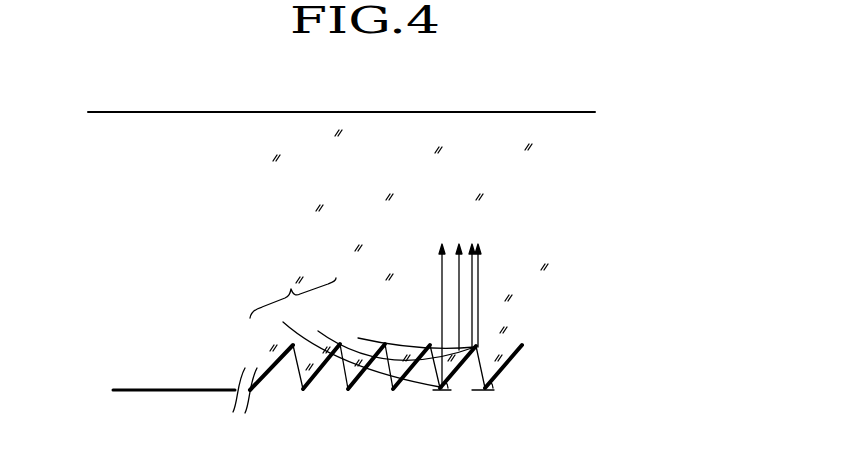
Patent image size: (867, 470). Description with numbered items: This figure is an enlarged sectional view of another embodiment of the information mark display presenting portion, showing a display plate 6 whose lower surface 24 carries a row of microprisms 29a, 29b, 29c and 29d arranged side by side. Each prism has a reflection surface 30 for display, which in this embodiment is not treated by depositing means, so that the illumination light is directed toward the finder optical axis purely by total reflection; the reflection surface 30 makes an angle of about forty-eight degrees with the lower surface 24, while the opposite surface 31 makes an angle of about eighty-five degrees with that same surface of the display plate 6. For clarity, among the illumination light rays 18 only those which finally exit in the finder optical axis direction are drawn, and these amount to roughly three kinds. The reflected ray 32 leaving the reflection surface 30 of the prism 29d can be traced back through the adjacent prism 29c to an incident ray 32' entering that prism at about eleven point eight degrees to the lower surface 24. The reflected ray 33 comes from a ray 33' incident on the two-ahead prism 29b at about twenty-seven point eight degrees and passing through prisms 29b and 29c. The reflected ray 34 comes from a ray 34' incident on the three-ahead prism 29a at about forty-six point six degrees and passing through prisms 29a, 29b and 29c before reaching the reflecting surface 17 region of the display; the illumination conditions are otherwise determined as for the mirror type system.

The display plate 6 is at (580, 84).
The reflecting surface 17 is at (519, 339).
The illumination light rays 18 is at (293, 290).
The lower surface 24 is at (178, 392).
The microprism 29a is at (301, 392).
The microprism 29b is at (346, 392).
The microprism 29c is at (392, 392).
The microprism 29d is at (440, 392).
The reflection surface for display 30 is at (484, 392).
The opposite surface 31 is at (506, 365).
The reflected ray 32 is at (493, 293).
The reflected ray 33 is at (476, 278).
The reflected ray 34 is at (425, 301).
The incident ray 32' is at (416, 322).
The incident ray 33' is at (396, 328).
The incident ray 34' is at (361, 342).